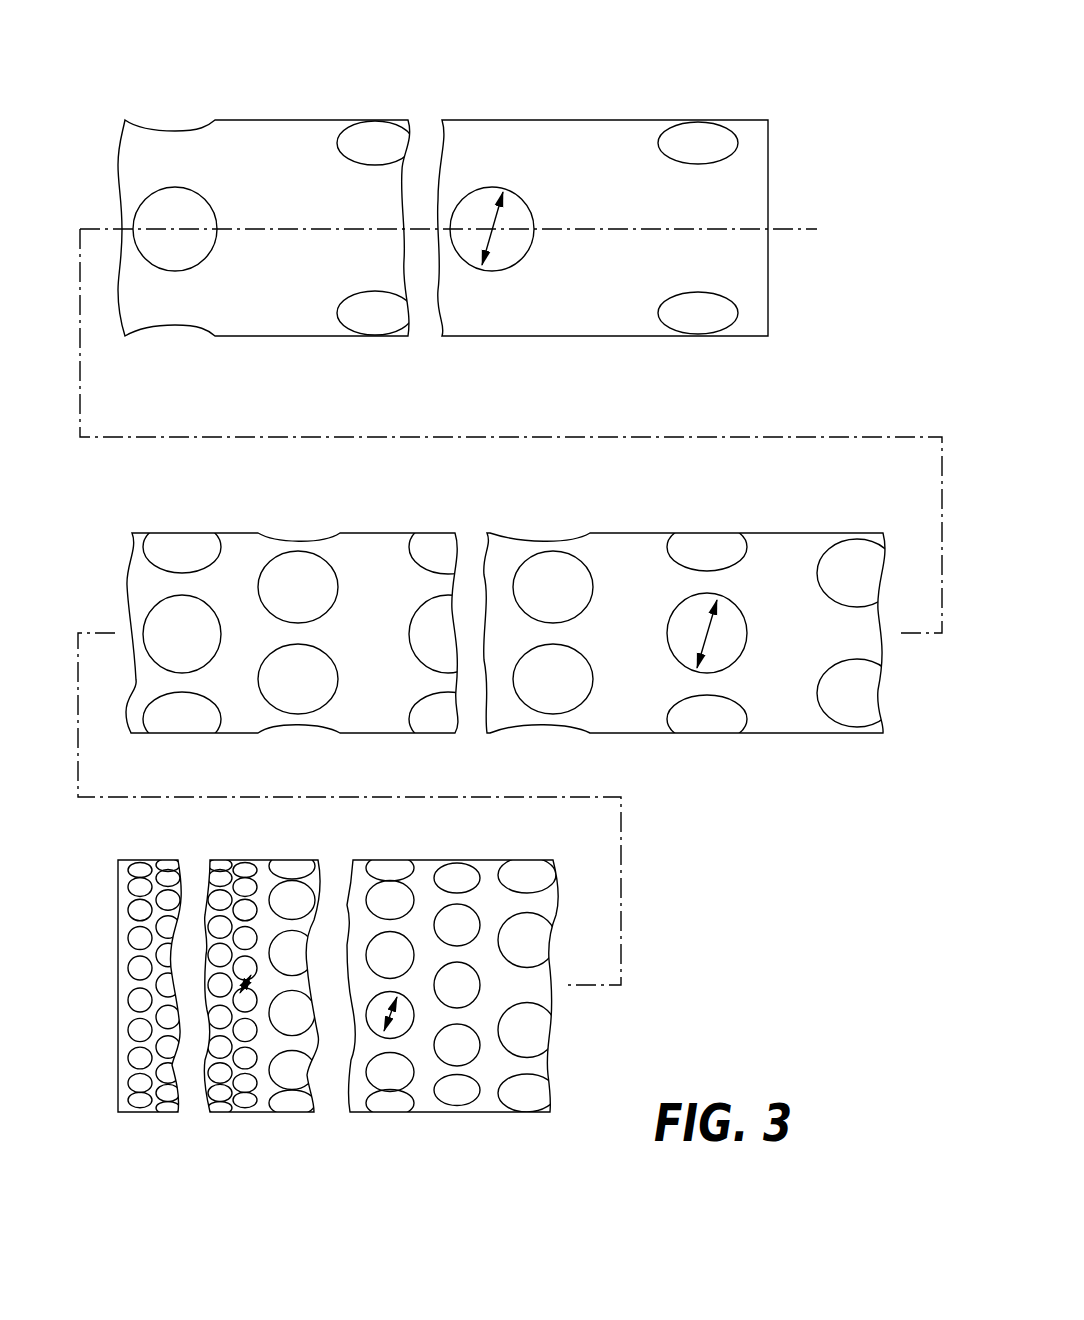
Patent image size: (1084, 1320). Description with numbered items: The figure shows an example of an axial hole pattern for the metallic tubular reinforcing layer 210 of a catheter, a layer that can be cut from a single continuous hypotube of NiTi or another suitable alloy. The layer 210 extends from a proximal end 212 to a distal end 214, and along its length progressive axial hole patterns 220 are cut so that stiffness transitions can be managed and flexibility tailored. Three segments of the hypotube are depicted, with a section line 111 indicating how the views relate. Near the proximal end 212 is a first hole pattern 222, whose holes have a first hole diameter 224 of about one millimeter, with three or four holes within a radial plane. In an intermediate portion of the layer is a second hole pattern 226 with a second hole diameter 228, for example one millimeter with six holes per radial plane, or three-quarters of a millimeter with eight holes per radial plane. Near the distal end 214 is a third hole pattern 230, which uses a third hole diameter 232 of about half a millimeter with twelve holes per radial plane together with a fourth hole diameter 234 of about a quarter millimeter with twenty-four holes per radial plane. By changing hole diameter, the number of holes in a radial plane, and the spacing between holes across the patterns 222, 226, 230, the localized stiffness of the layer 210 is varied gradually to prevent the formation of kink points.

The section line 111 is at (97, 228).
The proximal end 212 is at (768, 156).
The first hole pattern 222 is at (693, 142).
The first hole diameter 224 is at (493, 238).
The metallic tubular reinforcing layer 210 is at (220, 339).
The second hole pattern 226 is at (553, 588).
The second hole diameter 228 is at (705, 633).
The progressive axial hole patterns 220 is at (713, 738).
The distal end 214 is at (118, 937).
The third hole pattern 230 is at (457, 925).
The third hole diameter 232 is at (400, 1018).
The fourth hole diameter 234 is at (253, 988).